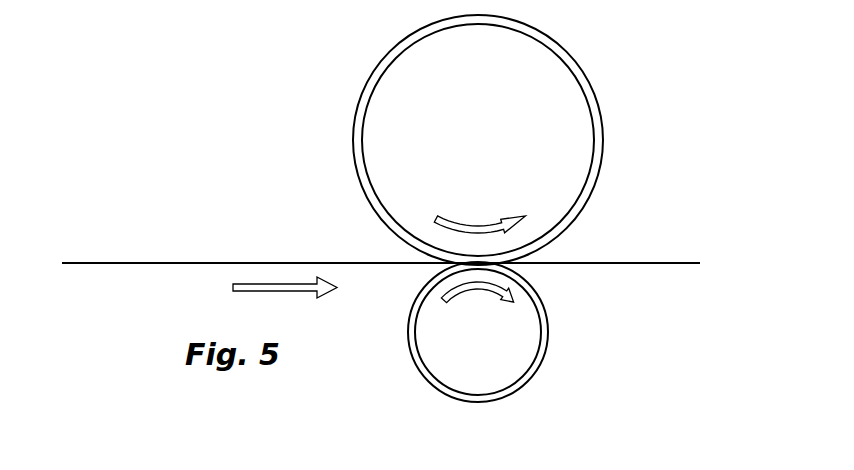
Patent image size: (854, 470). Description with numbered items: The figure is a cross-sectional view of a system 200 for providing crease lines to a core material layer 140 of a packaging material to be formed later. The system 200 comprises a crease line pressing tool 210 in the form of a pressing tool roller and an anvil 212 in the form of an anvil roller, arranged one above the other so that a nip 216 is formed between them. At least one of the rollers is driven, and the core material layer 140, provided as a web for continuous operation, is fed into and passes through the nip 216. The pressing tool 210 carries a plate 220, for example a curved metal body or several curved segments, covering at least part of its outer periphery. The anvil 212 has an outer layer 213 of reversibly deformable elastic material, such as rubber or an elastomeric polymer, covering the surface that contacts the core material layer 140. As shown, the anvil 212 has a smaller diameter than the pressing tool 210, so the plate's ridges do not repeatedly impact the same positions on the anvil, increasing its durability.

The core material layer 140 is at (147, 262).
The system 200 is at (641, 69).
The crease line pressing tool 210 is at (378, 130).
The plate 220 is at (376, 69).
The anvil 212 is at (430, 332).
The outer layer 213 is at (547, 318).
The nip 216 is at (546, 254).